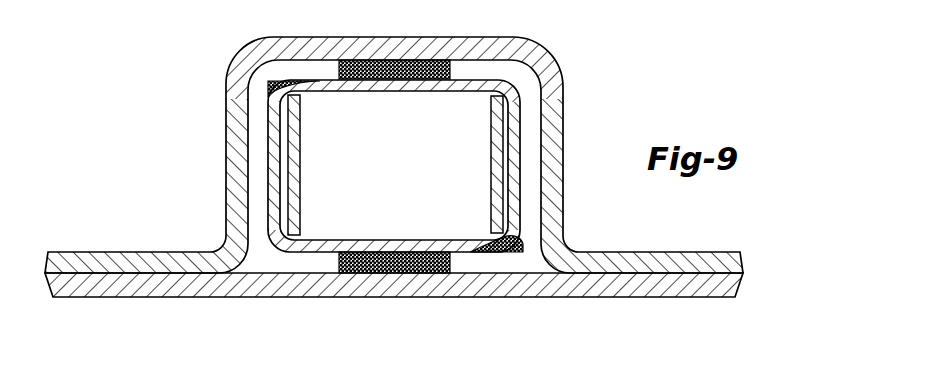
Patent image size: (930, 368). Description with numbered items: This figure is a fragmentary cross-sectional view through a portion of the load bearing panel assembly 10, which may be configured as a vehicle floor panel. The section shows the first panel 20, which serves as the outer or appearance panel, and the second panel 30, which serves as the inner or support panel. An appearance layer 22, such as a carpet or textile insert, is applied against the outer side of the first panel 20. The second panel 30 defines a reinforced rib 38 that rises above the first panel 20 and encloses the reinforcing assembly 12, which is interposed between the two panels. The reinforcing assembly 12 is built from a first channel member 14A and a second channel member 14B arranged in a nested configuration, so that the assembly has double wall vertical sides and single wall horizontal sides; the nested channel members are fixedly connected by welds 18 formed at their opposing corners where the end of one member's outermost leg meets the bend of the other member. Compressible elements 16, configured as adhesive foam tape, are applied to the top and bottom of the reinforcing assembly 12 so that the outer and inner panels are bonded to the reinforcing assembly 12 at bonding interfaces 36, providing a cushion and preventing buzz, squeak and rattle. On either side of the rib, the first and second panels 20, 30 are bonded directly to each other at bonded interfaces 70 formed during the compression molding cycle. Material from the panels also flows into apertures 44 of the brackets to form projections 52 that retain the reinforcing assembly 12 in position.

The panel assembly 10 is at (108, 133).
The reinforcing assembly 12 is at (258, 137).
The first channel member 14A is at (337, 92).
The second channel member 14B is at (440, 238).
The compressible element 16 is at (451, 67).
The weld 18 is at (270, 91).
The first panel 20 is at (625, 0).
The appearance layer 22 is at (712, 0).
The second panel 30 is at (610, 242).
The bonding interface 36 is at (377, 60).
The reinforced rib 38 is at (548, 52).
The bonded interface 70 is at (116, 274).
The aperture 44 is at (98, 7).
The projection 52 is at (121, 7).